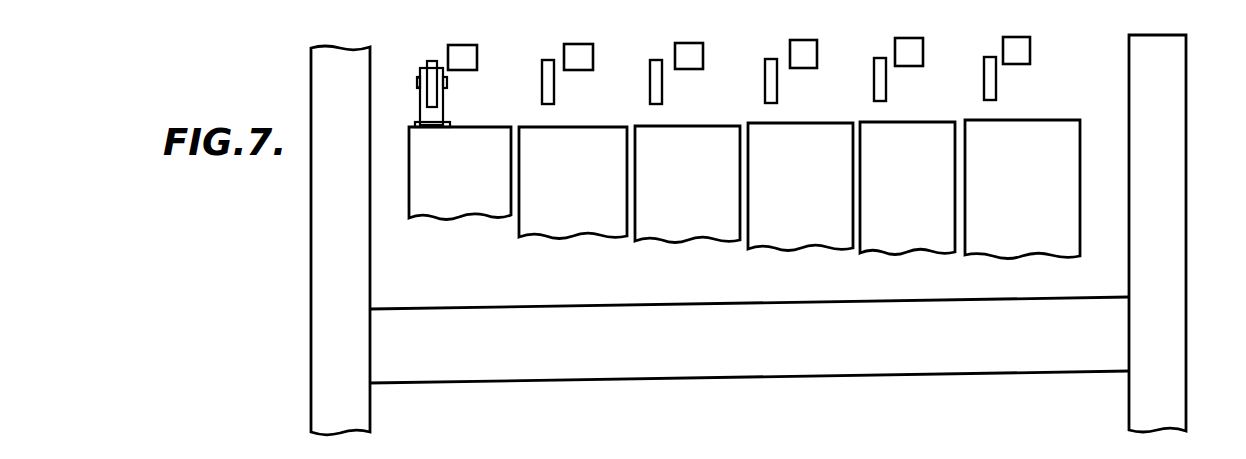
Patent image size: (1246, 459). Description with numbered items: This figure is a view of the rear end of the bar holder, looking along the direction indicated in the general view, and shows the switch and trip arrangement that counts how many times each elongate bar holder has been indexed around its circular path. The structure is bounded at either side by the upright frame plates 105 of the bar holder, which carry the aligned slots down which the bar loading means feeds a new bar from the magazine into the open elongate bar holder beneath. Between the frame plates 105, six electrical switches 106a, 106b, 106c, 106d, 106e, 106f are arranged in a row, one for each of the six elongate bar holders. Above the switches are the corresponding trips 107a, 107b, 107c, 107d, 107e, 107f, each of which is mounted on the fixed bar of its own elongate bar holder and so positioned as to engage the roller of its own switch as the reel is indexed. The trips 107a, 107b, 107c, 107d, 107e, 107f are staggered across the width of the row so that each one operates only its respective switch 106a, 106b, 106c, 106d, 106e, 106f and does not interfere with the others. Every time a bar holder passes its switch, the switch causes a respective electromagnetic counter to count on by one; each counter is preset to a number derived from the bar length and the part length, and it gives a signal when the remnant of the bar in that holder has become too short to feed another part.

The frame plates 105 is at (328, 219).
The electrical switch 106a is at (470, 202).
The electrical switch 106b is at (573, 222).
The electrical switch 106c is at (676, 228).
The electrical switch 106d is at (786, 230).
The electrical switch 106e is at (900, 232).
The electrical switch 106f is at (1012, 232).
The trip 107a is at (464, 60).
The trip 107b is at (580, 59).
The trip 107c is at (691, 58).
The trip 107d is at (805, 55).
The trip 107e is at (910, 53).
The trip 107f is at (1018, 52).